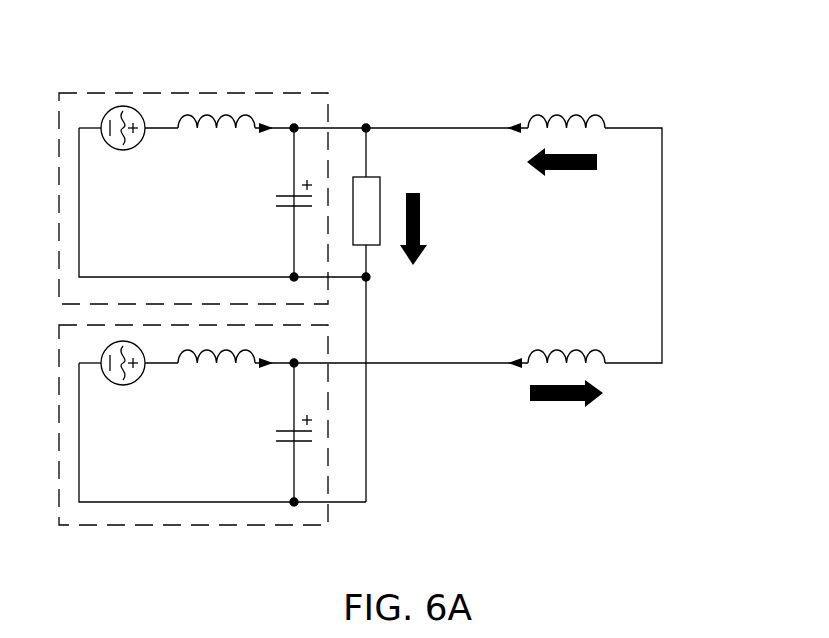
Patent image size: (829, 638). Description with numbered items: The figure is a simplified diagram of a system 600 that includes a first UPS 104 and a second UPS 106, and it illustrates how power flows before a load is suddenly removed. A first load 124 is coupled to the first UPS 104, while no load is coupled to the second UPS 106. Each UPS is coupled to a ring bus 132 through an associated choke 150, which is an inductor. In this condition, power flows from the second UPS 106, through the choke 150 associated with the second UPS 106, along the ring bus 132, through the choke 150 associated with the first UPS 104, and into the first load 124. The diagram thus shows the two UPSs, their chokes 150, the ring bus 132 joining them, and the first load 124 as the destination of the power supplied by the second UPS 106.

The system 600 is at (400, 304).
The first UPS 104 is at (194, 93).
The second UPS 106 is at (194, 525).
The first load 124 is at (383, 183).
The choke 150 is at (605, 112).
The ring bus 132 is at (662, 260).